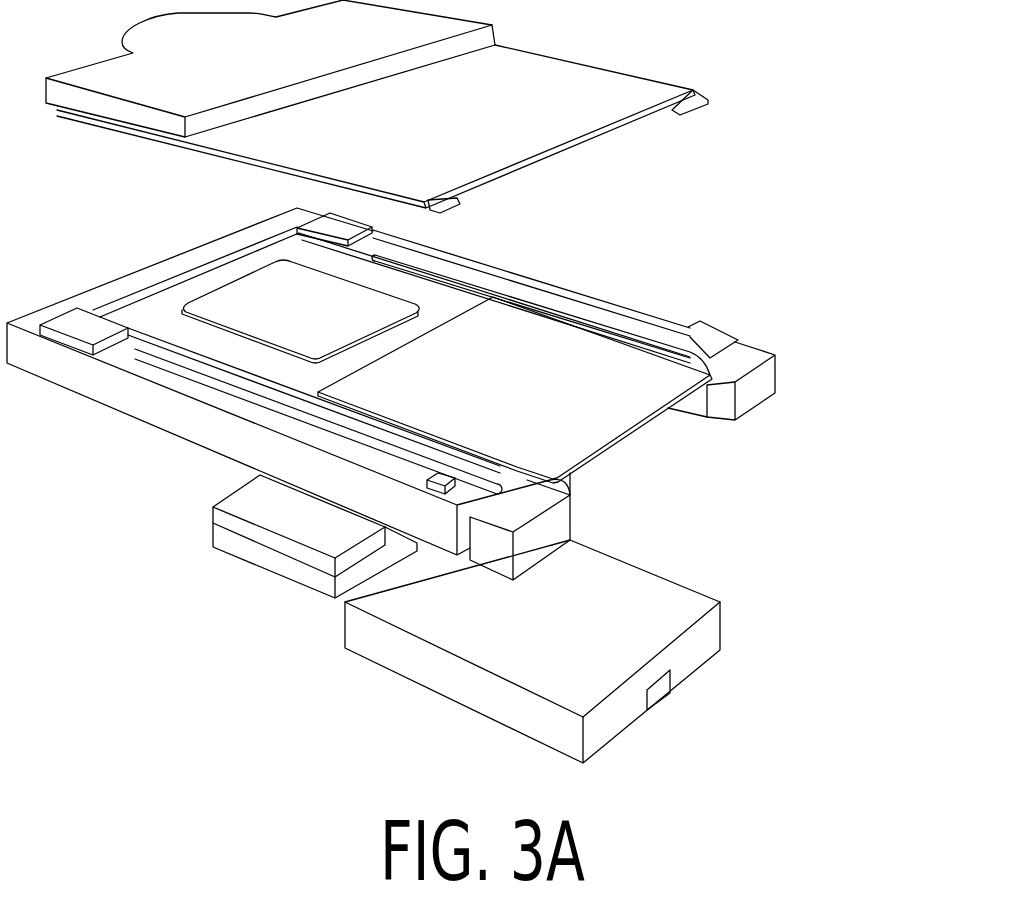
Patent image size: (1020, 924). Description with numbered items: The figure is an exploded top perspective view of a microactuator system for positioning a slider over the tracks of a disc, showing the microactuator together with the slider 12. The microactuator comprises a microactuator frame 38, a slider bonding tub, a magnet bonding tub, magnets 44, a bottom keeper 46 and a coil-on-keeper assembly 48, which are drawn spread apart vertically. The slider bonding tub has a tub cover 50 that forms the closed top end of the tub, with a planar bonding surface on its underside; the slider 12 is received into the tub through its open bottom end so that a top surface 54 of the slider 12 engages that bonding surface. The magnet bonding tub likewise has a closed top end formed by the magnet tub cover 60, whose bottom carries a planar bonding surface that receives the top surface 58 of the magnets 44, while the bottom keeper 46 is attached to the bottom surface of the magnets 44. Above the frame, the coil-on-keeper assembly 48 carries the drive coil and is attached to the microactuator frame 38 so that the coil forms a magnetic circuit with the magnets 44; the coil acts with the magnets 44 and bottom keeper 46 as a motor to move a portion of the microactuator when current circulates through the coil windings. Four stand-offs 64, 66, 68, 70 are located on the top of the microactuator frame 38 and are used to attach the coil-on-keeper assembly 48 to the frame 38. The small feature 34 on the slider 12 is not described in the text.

The slider 12 is at (566, 651).
The notch in base 34 is at (662, 692).
The microactuator frame 38 is at (118, 385).
The magnets 44 is at (215, 517).
The bottom keeper 46 is at (232, 542).
The coil-on-keeper assembly 48 is at (578, 82).
The tub cover 50 is at (613, 413).
The top surface 54 is at (660, 595).
The top surface 58 is at (280, 513).
The magnet tub cover 60 is at (255, 290).
The stand-off 64 is at (538, 514).
The stand-off 66 is at (688, 323).
The stand-off 68 is at (332, 215).
The stand-off 70 is at (85, 325).